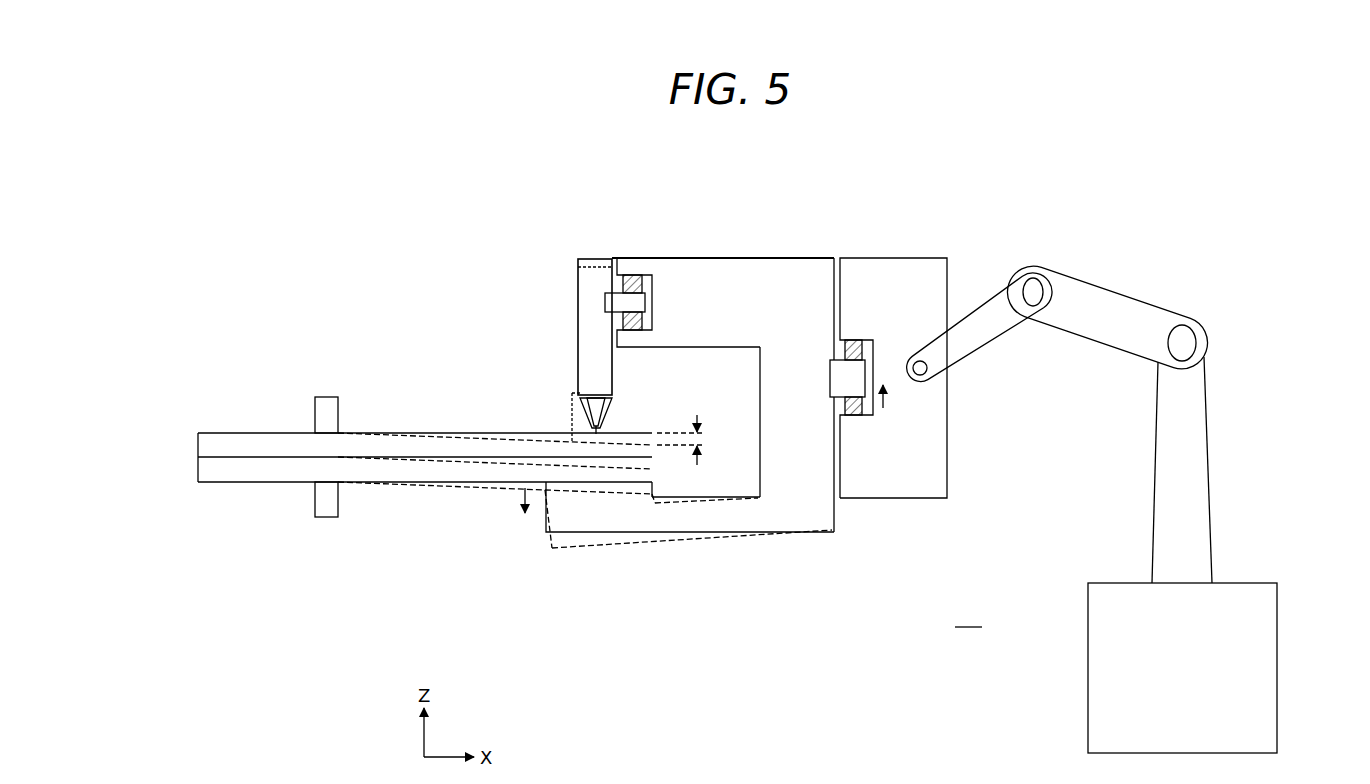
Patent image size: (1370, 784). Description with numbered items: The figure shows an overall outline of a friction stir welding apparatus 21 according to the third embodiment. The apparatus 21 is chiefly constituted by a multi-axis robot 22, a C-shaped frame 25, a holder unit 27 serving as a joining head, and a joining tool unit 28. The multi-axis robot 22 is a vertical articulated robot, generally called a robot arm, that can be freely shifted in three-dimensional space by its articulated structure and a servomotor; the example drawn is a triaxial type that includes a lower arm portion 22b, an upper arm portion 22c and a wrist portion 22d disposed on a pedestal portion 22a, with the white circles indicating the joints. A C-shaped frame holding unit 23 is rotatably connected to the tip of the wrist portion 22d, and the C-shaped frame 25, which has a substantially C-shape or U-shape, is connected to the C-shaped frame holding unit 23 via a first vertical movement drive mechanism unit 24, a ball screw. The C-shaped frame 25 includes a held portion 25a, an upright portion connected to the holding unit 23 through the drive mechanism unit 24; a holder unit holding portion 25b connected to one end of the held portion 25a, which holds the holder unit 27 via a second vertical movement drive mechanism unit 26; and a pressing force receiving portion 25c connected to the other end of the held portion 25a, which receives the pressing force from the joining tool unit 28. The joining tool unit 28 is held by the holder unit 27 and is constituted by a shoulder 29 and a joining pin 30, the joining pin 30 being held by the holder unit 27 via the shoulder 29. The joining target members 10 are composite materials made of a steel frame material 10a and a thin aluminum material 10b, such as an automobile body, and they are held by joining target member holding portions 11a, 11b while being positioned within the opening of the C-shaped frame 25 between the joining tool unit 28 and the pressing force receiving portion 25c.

The joining target members 10 is at (361, 458).
The steel frame material 10a is at (198, 473).
The thin aluminum material 10b is at (198, 441).
The joining target member holding portion 11a is at (340, 498).
The joining target member holding portion 11b is at (340, 412).
The friction stir welding apparatus 21 is at (968, 616).
The multi-axis robot 22 is at (1136, 491).
The pedestal portion 22a is at (1268, 640).
The lower arm portion 22b is at (1200, 479).
The upper arm portion 22c is at (1126, 300).
The wrist portion 22d is at (995, 328).
The C-shaped frame holding unit 23 is at (910, 295).
The vertical movement drive mechanism unit 24 is at (850, 340).
The C-shaped frame 25 is at (691, 390).
The held portion 25a is at (783, 380).
The holder unit holding portion 25b is at (707, 272).
The pressing force receiving portion 25c is at (607, 520).
The vertical movement drive mechanism unit 26 is at (635, 272).
The holder unit 27 is at (585, 316).
The joining tool unit 28 is at (595, 414).
The shoulder 29 is at (610, 403).
The joining pin 30 is at (605, 424).